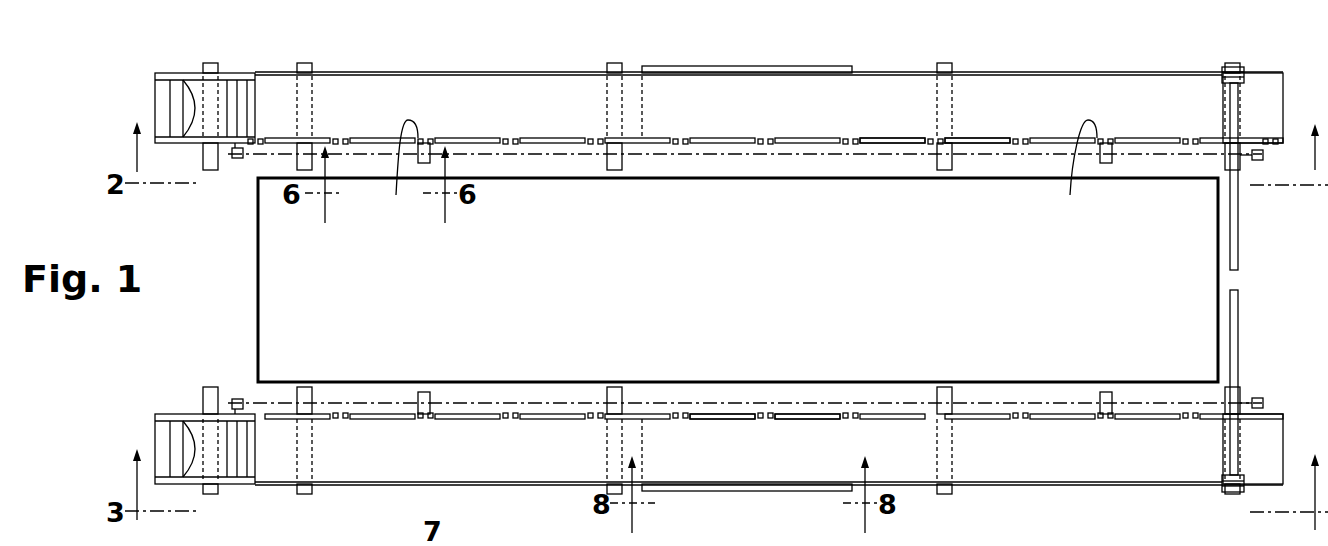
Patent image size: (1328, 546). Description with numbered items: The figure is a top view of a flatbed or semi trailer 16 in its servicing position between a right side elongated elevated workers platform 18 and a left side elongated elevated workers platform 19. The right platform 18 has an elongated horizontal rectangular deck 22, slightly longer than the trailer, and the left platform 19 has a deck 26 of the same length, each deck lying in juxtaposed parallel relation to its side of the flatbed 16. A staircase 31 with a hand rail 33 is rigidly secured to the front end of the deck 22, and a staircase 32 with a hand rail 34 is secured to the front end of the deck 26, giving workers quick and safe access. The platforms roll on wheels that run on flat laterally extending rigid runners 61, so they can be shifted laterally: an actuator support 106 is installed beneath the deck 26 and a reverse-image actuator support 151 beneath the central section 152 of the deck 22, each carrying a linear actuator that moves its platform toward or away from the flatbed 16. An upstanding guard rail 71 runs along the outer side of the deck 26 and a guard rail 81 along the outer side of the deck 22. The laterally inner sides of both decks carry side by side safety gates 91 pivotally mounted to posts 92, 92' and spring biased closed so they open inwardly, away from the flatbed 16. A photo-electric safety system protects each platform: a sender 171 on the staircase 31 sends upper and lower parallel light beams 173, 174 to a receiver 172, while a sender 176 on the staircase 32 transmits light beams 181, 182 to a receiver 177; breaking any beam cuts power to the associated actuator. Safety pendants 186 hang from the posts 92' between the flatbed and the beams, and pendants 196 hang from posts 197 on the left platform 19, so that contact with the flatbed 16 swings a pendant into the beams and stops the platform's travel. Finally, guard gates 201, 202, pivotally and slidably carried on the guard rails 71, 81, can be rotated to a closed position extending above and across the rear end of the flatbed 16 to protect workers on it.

The flatbed trailer 16 is at (297, 272).
The right side elongated elevated workers platform 18 is at (405, 72).
The left side elongated elevated workers platform 19 is at (398, 440).
The deck 22 is at (548, 105).
The deck 26 is at (555, 484).
The staircase 31 is at (155, 112).
The staircase 32 is at (155, 438).
The hand rail 33 is at (195, 112).
The hand rail 34 is at (192, 440).
The rigid runner 61 is at (212, 65).
The guard rail 71 is at (1020, 484).
The guard rail 81 is at (1060, 72).
The safety gate 91 is at (372, 137).
The post 92 is at (763, 180).
The post 92' is at (742, 170).
The actuator support 106 is at (722, 492).
The actuator support 151 is at (722, 66).
The central section 152 is at (745, 100).
The sender 171 is at (235, 160).
The receiver 172 is at (1258, 162).
The light beam 173 is at (992, 150).
The light beam 174 is at (993, 146).
The sender 176 is at (233, 398).
The receiver 177 is at (1264, 404).
The light beam 181 is at (820, 404).
The light beam 182 is at (820, 406).
The safety pendant 186 is at (424, 160).
The pendant 196 is at (425, 392).
The post 197 is at (428, 418).
The guard gate 201 is at (1238, 342).
The guard gate 202 is at (1238, 247).